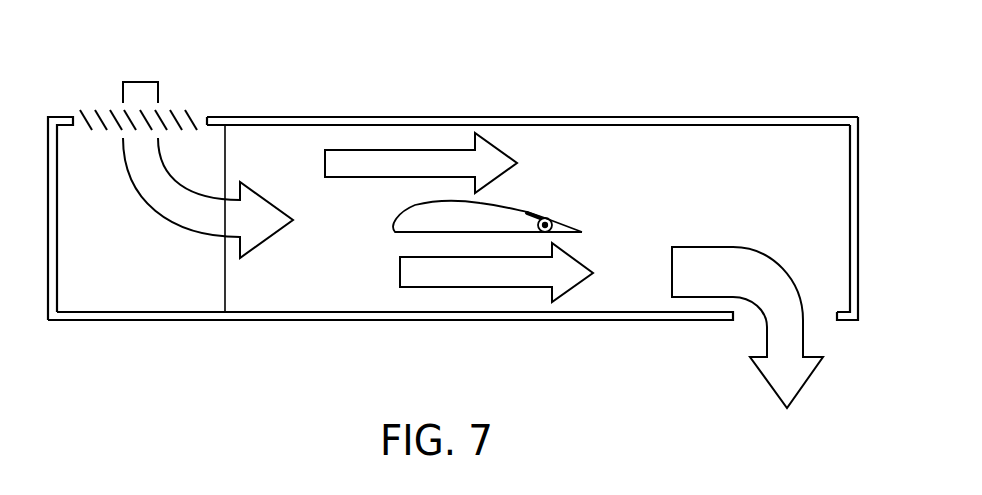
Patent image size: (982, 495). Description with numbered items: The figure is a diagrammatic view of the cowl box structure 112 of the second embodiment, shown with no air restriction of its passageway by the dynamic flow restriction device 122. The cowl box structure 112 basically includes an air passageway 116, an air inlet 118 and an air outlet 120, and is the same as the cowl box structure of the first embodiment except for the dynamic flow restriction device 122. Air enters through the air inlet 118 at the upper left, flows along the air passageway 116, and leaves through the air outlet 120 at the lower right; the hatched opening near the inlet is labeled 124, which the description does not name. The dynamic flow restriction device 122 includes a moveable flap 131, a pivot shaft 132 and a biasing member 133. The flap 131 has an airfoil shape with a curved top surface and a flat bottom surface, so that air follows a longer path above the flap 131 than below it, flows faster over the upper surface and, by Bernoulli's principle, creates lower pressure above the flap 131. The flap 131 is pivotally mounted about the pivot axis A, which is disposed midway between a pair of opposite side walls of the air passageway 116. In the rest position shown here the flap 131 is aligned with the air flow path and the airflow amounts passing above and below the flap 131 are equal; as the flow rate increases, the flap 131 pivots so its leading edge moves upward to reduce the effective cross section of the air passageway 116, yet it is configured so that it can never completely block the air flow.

The cowl box structure 112 is at (593, 53).
The air passageway 116 is at (698, 194).
The air inlet 118 is at (206, 117).
The air outlet 120 is at (736, 318).
The dynamic flow restriction device 122 is at (567, 236).
The inlet 124 is at (90, 128).
The moveable flap 131 is at (410, 203).
The pivot shaft 132 is at (526, 211).
The biasing member 133 is at (549, 218).
The pivot axis A is at (552, 222).